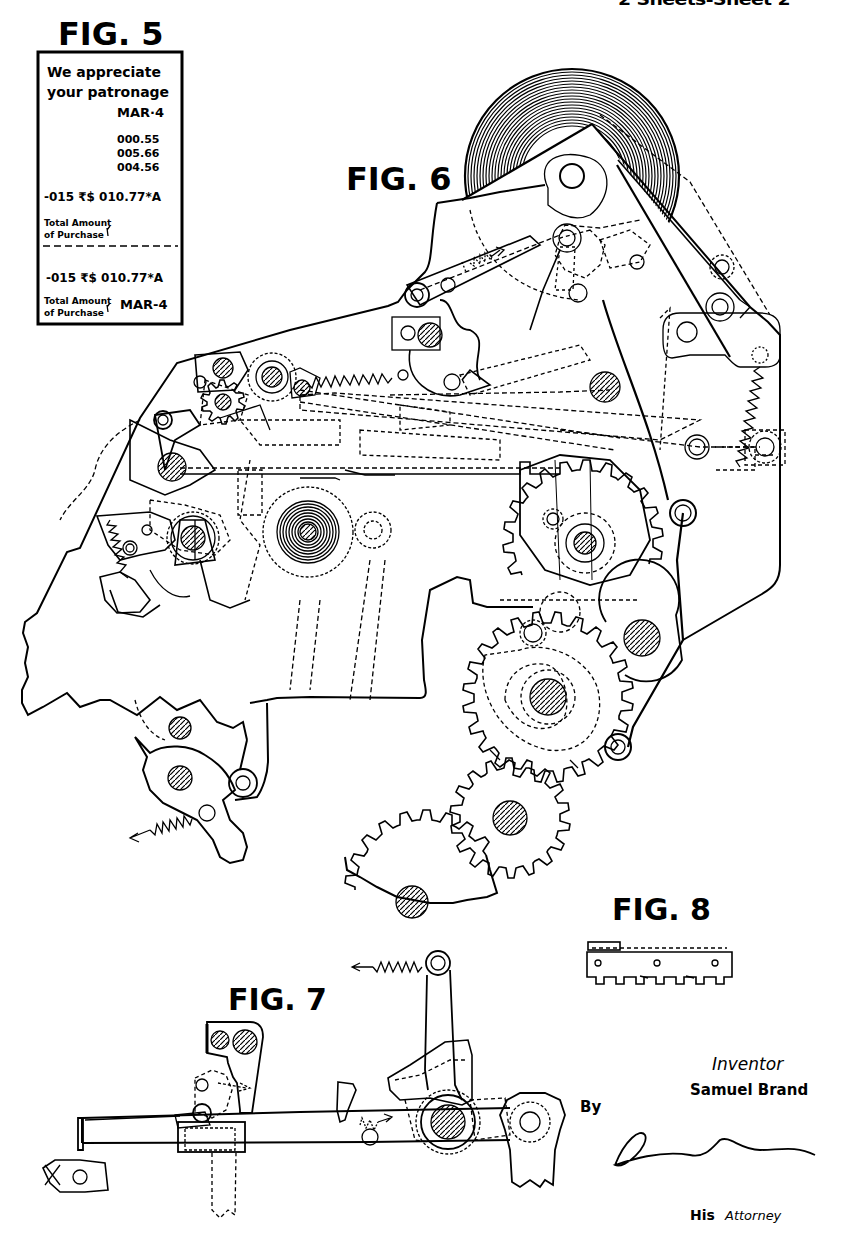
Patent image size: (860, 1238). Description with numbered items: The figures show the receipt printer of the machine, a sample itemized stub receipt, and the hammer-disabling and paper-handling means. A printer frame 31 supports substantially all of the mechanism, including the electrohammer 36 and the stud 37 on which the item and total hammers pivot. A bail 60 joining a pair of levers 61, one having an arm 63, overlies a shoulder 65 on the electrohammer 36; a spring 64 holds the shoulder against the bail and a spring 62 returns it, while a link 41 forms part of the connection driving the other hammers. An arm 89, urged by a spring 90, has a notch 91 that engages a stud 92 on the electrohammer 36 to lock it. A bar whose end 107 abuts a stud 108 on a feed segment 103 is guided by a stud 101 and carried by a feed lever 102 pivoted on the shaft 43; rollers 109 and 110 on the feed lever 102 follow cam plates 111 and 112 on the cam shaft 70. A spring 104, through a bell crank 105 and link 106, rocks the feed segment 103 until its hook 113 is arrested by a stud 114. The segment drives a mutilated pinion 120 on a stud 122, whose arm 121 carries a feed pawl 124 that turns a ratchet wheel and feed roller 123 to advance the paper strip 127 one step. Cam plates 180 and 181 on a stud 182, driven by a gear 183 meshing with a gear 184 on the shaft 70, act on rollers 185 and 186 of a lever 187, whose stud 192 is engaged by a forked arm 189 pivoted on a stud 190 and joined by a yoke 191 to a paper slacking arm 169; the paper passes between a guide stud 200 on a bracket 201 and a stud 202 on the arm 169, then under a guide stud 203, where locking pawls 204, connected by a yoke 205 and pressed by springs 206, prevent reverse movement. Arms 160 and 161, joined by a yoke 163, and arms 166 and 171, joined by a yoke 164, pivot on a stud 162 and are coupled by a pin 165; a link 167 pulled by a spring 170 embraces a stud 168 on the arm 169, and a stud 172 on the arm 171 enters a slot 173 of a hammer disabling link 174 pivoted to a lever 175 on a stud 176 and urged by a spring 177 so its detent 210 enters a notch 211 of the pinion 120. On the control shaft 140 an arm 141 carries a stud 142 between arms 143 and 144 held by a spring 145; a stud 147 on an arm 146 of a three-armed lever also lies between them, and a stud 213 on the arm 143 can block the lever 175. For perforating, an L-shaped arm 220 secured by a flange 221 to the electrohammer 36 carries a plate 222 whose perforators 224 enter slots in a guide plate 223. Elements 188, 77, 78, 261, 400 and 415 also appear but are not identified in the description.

In FIG. 6, the printer frame 31 is at (437, 230).
In FIG. 6, the yoke 191 is at (603, 152).
In FIG. 6, the forked arm 189 is at (548, 188).
In FIG. 6, the stud 190 is at (580, 176).
In FIG. 6, the paper strip 127 is at (690, 180).
In FIG. 6, the stud 192 is at (557, 280).
In FIG. 6, the link 167 is at (555, 244).
In FIG. 6, the stud 168 is at (585, 252).
In FIG. 6, the paper slacking arm 169 is at (690, 237).
In FIG. 6, the spring 170 is at (492, 257).
In FIG. 6, the bracket 201 is at (710, 248).
In FIG. 6, the guide stud 200 is at (734, 266).
In FIG. 6, the stud 202 is at (740, 302).
In FIG. 6, the springs 206 is at (762, 376).
In FIG. 6, the lever 187 is at (612, 340).
In FIG. 6, the shaft 188 is at (605, 374).
In FIG. 6, the stud 37 is at (700, 440).
In FIG. 7, the stud 37 is at (445, 1142).
In FIG. 6, the locking pawls 204 is at (775, 462).
In FIG. 6, the yoke 205 is at (760, 466).
In FIG. 6, the guide stud 203 is at (698, 460).
In FIG. 6, the roller 185 is at (692, 514).
In FIG. 6, the feed lever 102 is at (681, 572).
In FIG. 6, the roller 186 is at (583, 520).
In FIG. 6, the stud 182 is at (588, 548).
In FIG. 6, the gear 183 is at (505, 563).
In FIG. 6, the cam plate 180 is at (582, 582).
In FIG. 6, the cam plate 181 is at (588, 600).
In FIG. 6, the roller 110 is at (520, 630).
In FIG. 6, the gear 184 is at (486, 650).
In FIG. 6, the cam shaft 70 is at (548, 720).
In FIG. 6, the shaft 43 is at (680, 650).
In FIG. 6, the roller 109 is at (632, 745).
In FIG. 6, the cam plate 112 is at (495, 754).
In FIG. 6, the cam plate 111 is at (576, 766).
In FIG. 6, the gear 78 is at (566, 815).
In FIG. 6, the sector gear 77 is at (437, 815).
In FIG. 6, the shaft 261 is at (414, 896).
In FIG. 6, the link 106 is at (266, 755).
In FIG. 6, the bell crank 105 is at (225, 818).
In FIG. 6, the spring 104 is at (165, 843).
In FIG. 6, the bar 400 is at (428, 475).
In FIG. 6, the end 107 is at (330, 484).
In FIG. 6, the stud 101 is at (380, 478).
In FIG. 6, the stud 92 is at (366, 411).
In FIG. 7, the stud 92 is at (182, 1132).
In FIG. 6, the arm 160 is at (450, 419).
In FIG. 7, the arm 160 is at (258, 1062).
In FIG. 6, the pin 165 is at (405, 301).
In FIG. 7, the pin 165 is at (206, 1030).
In FIG. 6, the arm 166 is at (438, 290).
In FIG. 6, the yoke 164 is at (392, 333).
In FIG. 6, the stud 162 is at (441, 337).
In FIG. 7, the stud 162 is at (255, 1042).
In FIG. 6, the arm 171 is at (456, 377).
In FIG. 6, the stud 172 is at (480, 376).
In FIG. 6, the slot 173 is at (482, 389).
In FIG. 6, the hammer disabling link 174 is at (382, 378).
In FIG. 6, the spring 177 is at (305, 380).
In FIG. 6, the detent 210 is at (302, 385).
In FIG. 6, the notch 211 is at (272, 365).
In FIG. 6, the feed roller 123 is at (220, 360).
In FIG. 6, the feed pawl 124 is at (210, 369).
In FIG. 6, the arm 121 is at (205, 392).
In FIG. 6, the mutilated pinion 120 is at (200, 410).
In FIG. 6, the stud 122 is at (218, 421).
In FIG. 6, the lever 175 is at (154, 422).
In FIG. 6, the feed segment 103 is at (150, 442).
In FIG. 6, the stud 176 is at (158, 472).
In FIG. 6, the stud 213 is at (145, 510).
In FIG. 6, the stud 108 is at (246, 496).
In FIG. 6, the stud 114 is at (248, 505).
In FIG. 6, the hook 113 is at (200, 520).
In FIG. 6, the arm 143 is at (95, 521).
In FIG. 6, the spring 145 is at (100, 541).
In FIG. 6, the stud 147 is at (120, 549).
In FIG. 6, the arm 146 is at (120, 566).
In FIG. 6, the arm 141 is at (110, 591).
In FIG. 6, the shaft 140 is at (205, 577).
In FIG. 6, the stud 142 is at (176, 596).
In FIG. 6, the arm 144 is at (130, 610).
In FIG. 6, the arm 415 is at (190, 592).
In FIG. 7, the electrohammer 36 is at (288, 1142).
In FIG. 7, the spring 62 is at (405, 978).
In FIG. 7, the bail 60 is at (408, 1062).
In FIG. 7, the shoulder 65 is at (386, 1082).
In FIG. 7, the spring 64 is at (368, 1148).
In FIG. 7, the levers 61 is at (405, 1145).
In FIG. 7, the arm 63 is at (495, 1145).
In FIG. 7, the link 41 is at (515, 1190).
In FIG. 7, the yoke 163 is at (206, 1046).
In FIG. 7, the arm 161 is at (218, 1075).
In FIG. 7, the spring 90 is at (252, 1087).
In FIG. 7, the notch 91 is at (195, 1105).
In FIG. 7, the L-shaped arm 220 is at (106, 1122).
In FIG. 8, the L-shaped arm 220 is at (690, 950).
In FIG. 7, the flange 221 is at (175, 1120).
In FIG. 8, the flange 221 is at (618, 945).
In FIG. 7, the plate 222 is at (78, 1147).
In FIG. 8, the plate 222 is at (636, 985).
In FIG. 7, the guide plate 223 is at (55, 1178).
In FIG. 7, the arm 89 is at (235, 1185).
In FIG. 8, the perforators 224 is at (690, 985).